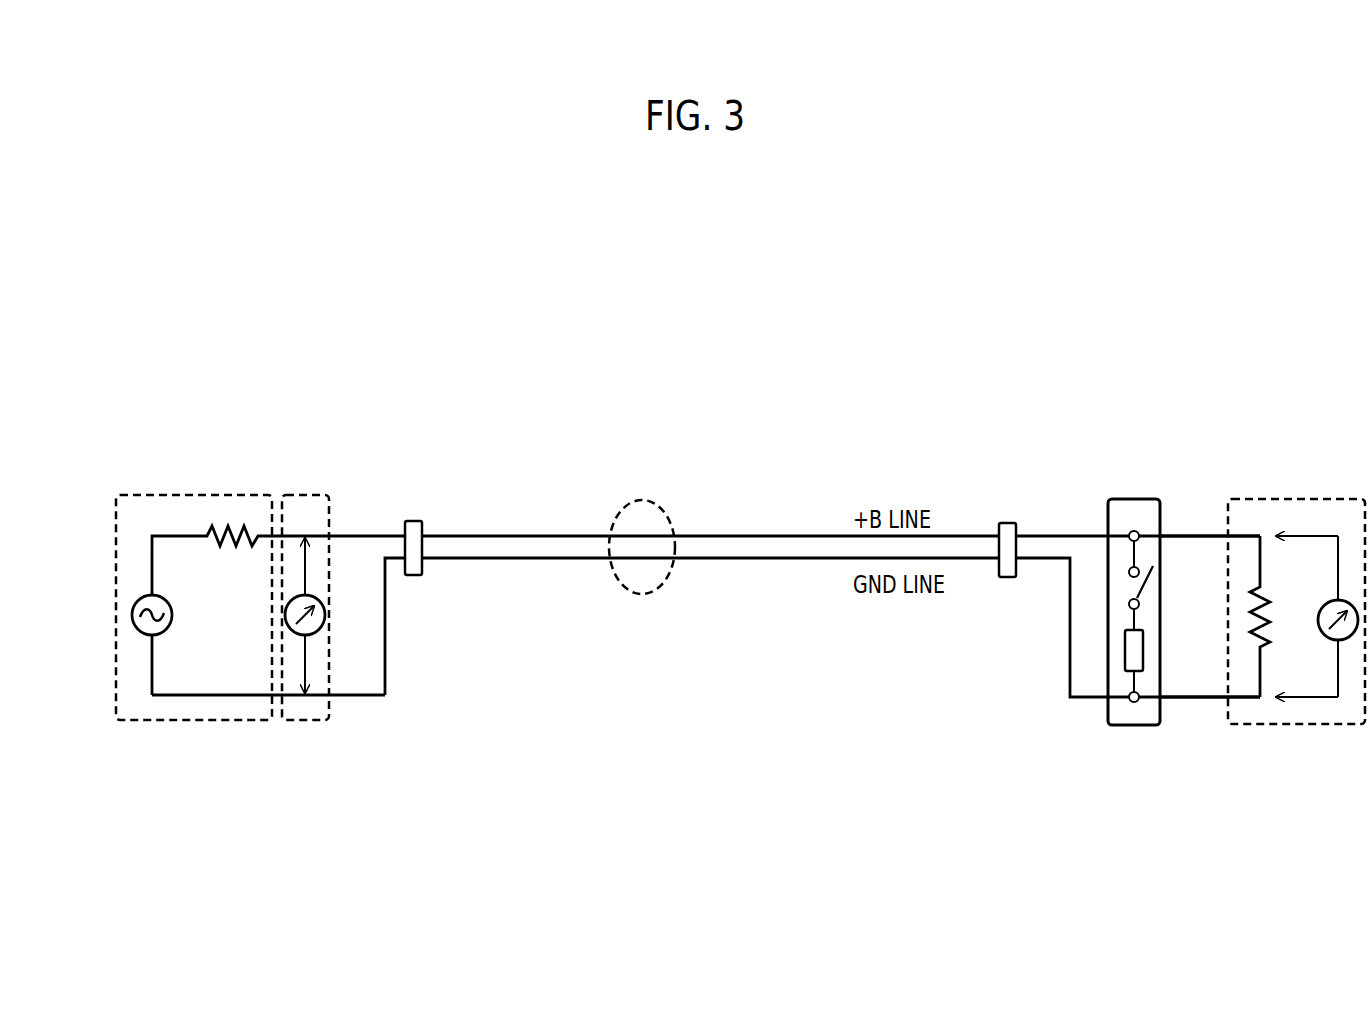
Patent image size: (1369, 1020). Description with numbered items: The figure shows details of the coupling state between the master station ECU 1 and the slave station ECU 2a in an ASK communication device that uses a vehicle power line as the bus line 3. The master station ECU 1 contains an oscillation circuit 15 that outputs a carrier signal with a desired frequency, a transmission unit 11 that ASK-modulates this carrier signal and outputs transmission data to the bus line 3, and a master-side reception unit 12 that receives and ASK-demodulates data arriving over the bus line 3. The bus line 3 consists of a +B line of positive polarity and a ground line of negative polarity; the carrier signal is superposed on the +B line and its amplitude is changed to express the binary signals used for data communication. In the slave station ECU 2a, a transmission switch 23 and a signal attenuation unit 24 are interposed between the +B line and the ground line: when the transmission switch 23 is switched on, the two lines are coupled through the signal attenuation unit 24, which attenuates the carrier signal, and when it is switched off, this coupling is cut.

The master station ECU 1 is at (290, 398).
The transmission unit 11 is at (237, 495).
The master-side reception unit 12 is at (330, 515).
The oscillation circuit 15 is at (134, 603).
The bus line 3 is at (642, 500).
The slave station ECU 2a is at (1277, 400).
The transmission switch 23 is at (1156, 584).
The signal attenuation unit 24 is at (1143, 652).